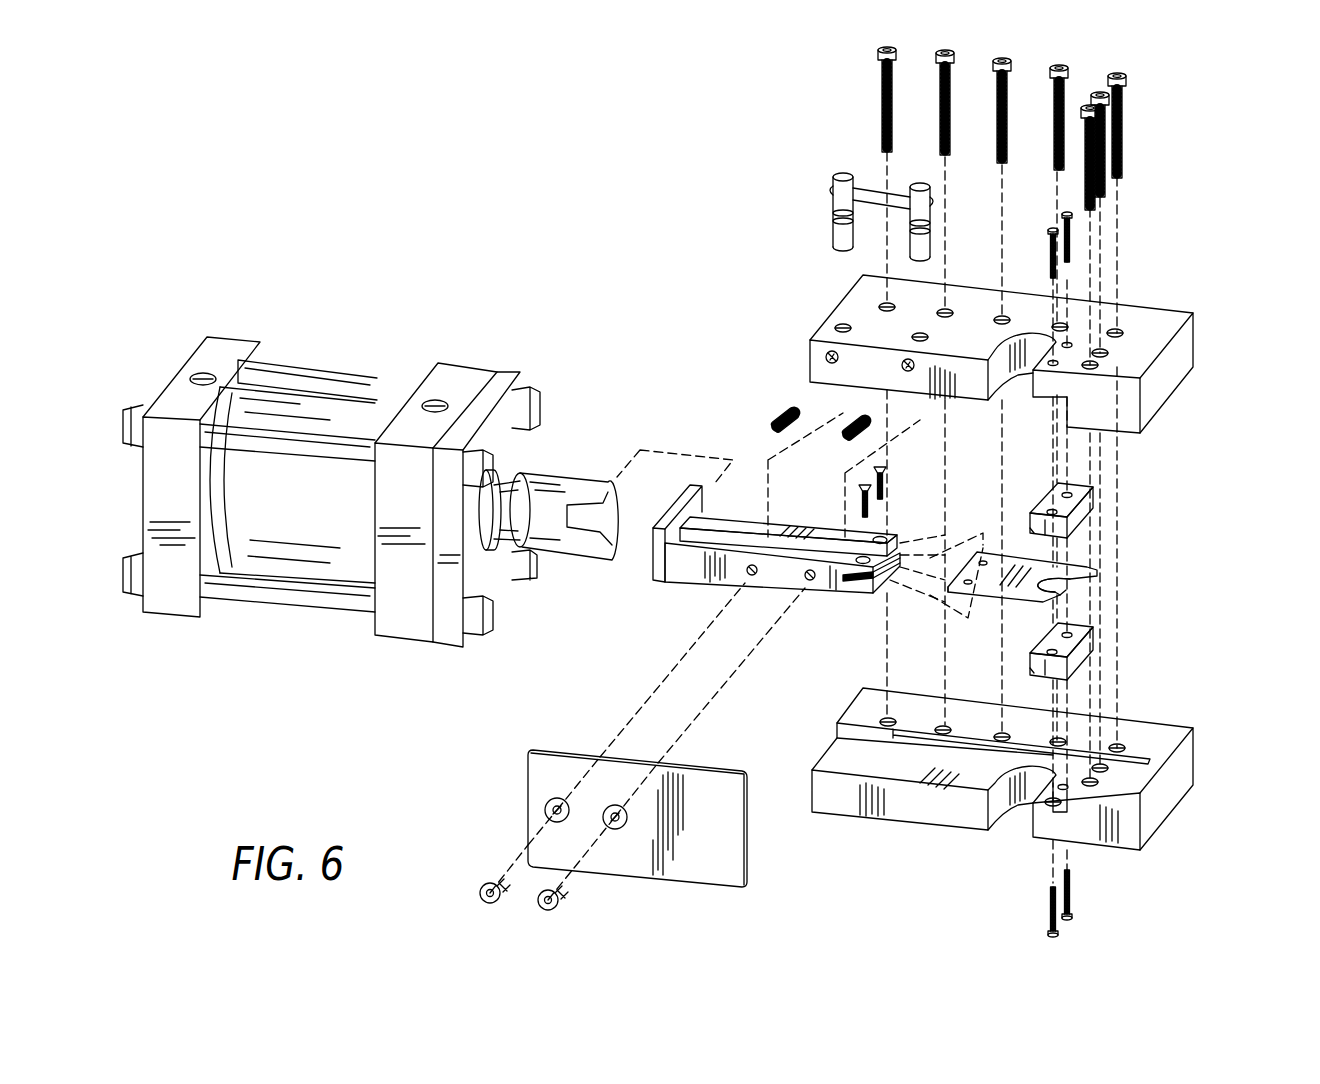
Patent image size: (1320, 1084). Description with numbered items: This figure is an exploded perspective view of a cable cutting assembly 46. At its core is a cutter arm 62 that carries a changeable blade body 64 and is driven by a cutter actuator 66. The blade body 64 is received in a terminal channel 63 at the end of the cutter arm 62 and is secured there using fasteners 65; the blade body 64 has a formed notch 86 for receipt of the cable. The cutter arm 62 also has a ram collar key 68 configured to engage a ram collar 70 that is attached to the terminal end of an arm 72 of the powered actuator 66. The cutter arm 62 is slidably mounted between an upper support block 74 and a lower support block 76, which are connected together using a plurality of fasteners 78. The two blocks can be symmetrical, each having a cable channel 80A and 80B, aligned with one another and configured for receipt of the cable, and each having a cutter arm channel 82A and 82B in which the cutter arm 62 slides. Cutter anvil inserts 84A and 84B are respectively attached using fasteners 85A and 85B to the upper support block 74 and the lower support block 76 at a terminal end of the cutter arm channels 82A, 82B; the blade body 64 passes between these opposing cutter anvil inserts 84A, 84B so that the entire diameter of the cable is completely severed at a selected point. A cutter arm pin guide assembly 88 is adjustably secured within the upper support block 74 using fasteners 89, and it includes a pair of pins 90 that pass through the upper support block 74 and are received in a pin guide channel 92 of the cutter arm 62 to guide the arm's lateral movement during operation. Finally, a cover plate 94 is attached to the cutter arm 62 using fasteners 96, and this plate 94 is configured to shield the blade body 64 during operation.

The cable cutting assembly 46 is at (630, 197).
The cutter actuator 66 is at (367, 308).
The arm 72 is at (510, 507).
The ram collar 70 is at (600, 517).
The ram collar key 68 is at (650, 563).
The cutter arm 62 is at (751, 573).
The pin guide channel 92 is at (783, 515).
The terminal channel 63 is at (858, 577).
The fasteners 65 is at (883, 478).
The fasteners 89 is at (843, 423).
The cutter arm channel 82A is at (808, 348).
The cable channel 80A is at (1037, 337).
The upper support block 74 is at (987, 339).
The fasteners 78 is at (1073, 70).
The fasteners 85A is at (1072, 212).
The cutter arm pin guide assembly 88 is at (838, 184).
The pins 90 is at (835, 218).
The cutter anvil insert 84A is at (1087, 503).
The blade body 64 is at (1041, 566).
The formed notch 86 is at (1077, 588).
The cutter anvil insert 84B is at (1087, 645).
The cutter arm channel 82B is at (838, 762).
The cable channel 80B is at (1005, 807).
The lower support block 76 is at (986, 794).
The fasteners 85B is at (1050, 908).
The cover plate 94 is at (708, 863).
The fasteners 96 is at (482, 898).